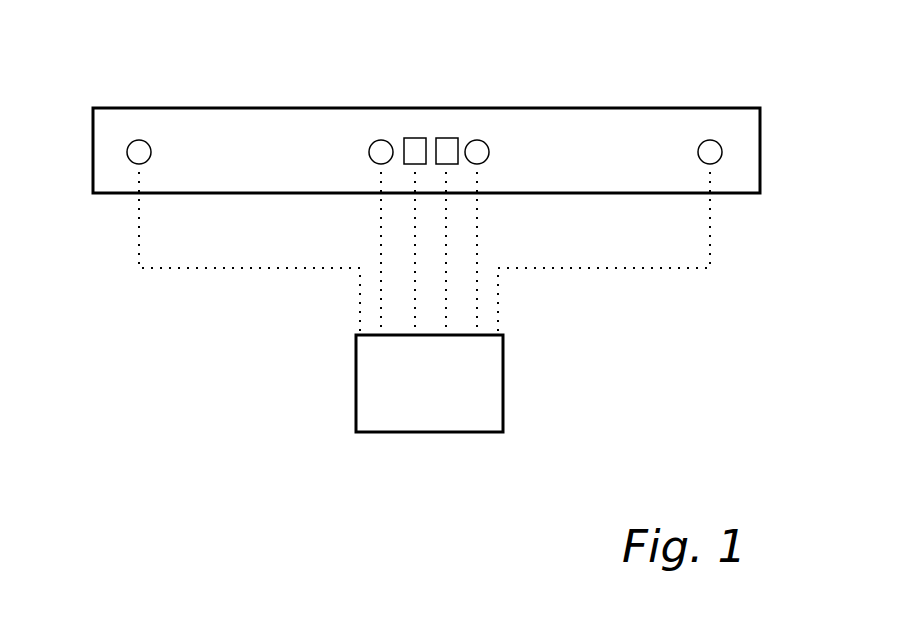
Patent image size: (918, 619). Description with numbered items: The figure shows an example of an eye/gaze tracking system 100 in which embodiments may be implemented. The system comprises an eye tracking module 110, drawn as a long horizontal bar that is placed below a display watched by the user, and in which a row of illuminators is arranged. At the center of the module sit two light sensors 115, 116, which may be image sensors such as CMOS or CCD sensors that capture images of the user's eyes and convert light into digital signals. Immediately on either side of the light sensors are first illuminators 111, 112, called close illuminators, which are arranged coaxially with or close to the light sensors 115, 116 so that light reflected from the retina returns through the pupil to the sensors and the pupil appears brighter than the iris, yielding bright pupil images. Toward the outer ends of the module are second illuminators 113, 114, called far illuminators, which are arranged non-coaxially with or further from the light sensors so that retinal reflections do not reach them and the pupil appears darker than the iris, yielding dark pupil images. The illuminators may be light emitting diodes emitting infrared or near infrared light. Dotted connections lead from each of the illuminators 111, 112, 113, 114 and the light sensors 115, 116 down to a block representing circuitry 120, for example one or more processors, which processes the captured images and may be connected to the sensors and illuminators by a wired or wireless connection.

The eye/gaze tracking system 100 is at (147, 397).
The eye tracking module 110 is at (747, 108).
The first illuminator (close illuminator) 111 is at (381, 148).
The first illuminator (close illuminator) 112 is at (478, 150).
The second illuminator (far illuminator) 113 is at (139, 148).
The second illuminator (far illuminator) 114 is at (708, 147).
The light sensor 115 is at (418, 137).
The light sensor 116 is at (443, 137).
The circuitry 120 is at (372, 417).